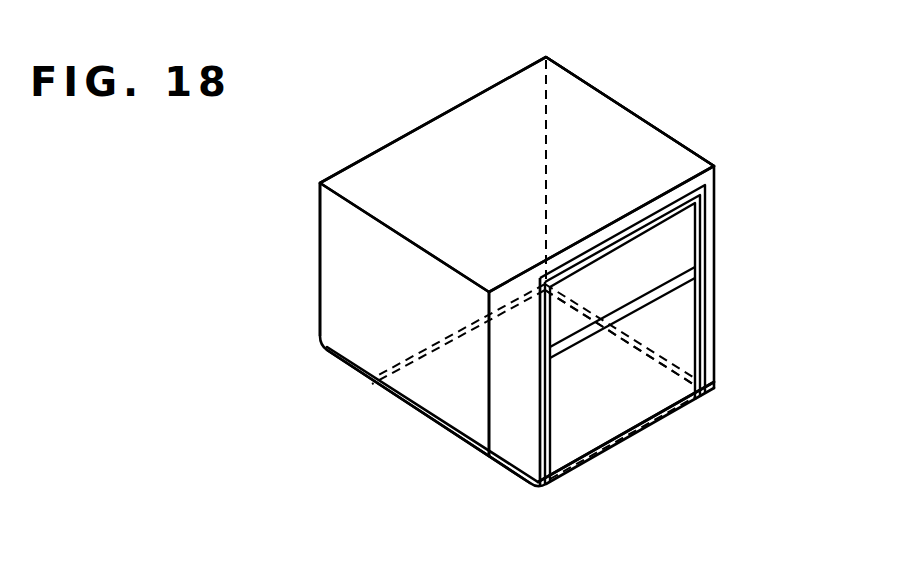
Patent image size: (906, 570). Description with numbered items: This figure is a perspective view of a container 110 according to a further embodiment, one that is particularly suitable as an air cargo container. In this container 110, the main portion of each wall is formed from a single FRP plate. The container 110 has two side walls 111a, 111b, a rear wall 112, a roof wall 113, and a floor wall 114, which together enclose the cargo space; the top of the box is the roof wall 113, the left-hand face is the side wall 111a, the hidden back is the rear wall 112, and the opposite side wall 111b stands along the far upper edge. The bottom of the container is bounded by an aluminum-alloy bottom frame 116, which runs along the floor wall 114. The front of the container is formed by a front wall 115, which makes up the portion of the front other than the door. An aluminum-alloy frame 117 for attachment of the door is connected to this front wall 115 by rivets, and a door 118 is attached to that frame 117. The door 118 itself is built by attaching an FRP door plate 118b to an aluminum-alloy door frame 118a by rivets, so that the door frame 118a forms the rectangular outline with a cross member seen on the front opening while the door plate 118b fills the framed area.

The container 110 is at (680, 132).
The side wall 111a is at (330, 302).
The side wall 111b is at (600, 122).
The rear wall 112 is at (385, 173).
The roof wall 113 is at (583, 108).
The floor wall 114 is at (613, 417).
The front wall 115 is at (511, 392).
The bottom frame 116 is at (672, 373).
The frame 117 is at (538, 428).
The door 118 is at (700, 231).
The door frame 118a is at (665, 297).
The door plate 118b is at (660, 330).